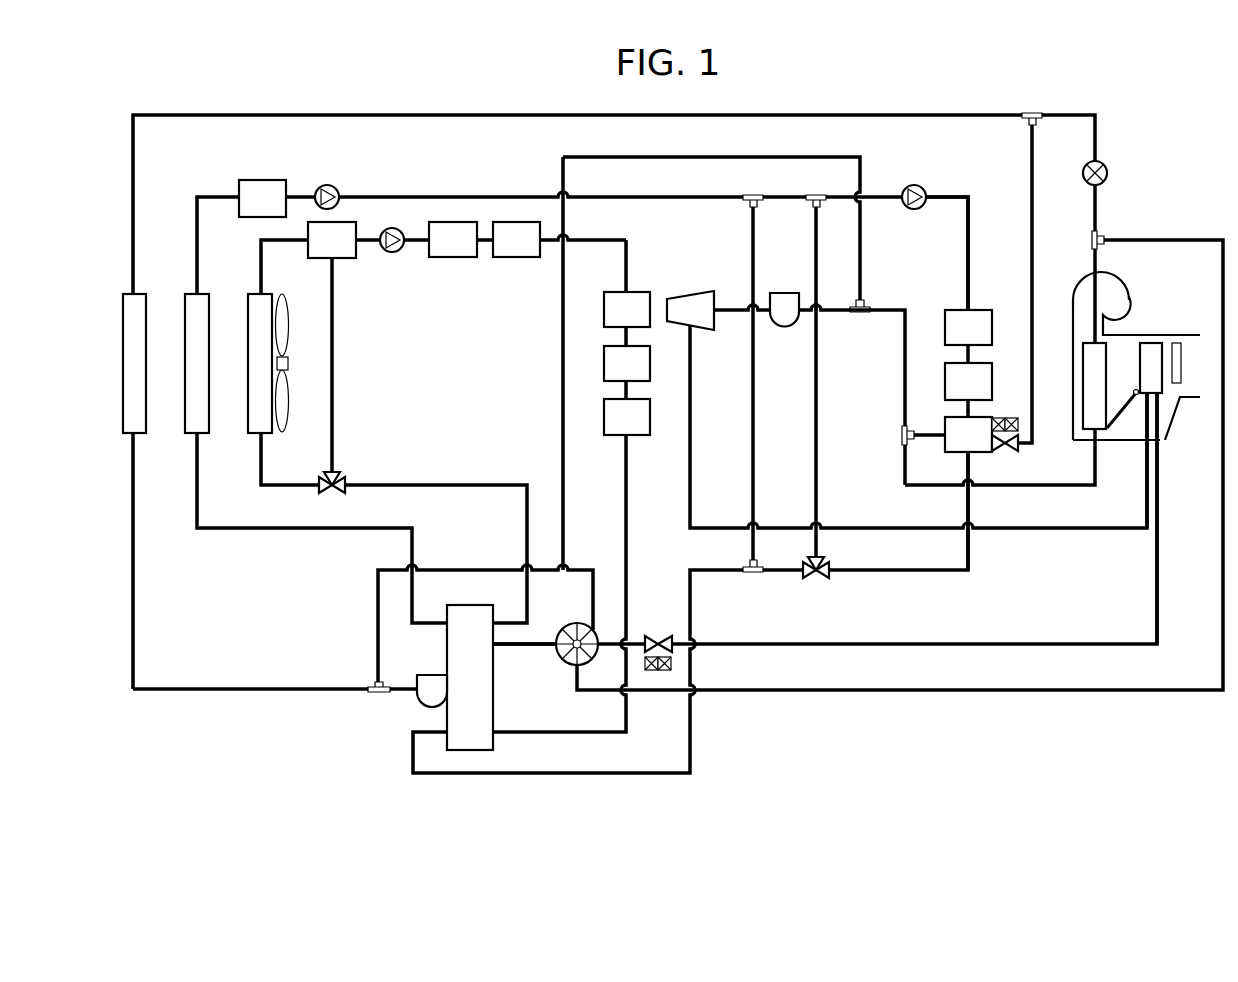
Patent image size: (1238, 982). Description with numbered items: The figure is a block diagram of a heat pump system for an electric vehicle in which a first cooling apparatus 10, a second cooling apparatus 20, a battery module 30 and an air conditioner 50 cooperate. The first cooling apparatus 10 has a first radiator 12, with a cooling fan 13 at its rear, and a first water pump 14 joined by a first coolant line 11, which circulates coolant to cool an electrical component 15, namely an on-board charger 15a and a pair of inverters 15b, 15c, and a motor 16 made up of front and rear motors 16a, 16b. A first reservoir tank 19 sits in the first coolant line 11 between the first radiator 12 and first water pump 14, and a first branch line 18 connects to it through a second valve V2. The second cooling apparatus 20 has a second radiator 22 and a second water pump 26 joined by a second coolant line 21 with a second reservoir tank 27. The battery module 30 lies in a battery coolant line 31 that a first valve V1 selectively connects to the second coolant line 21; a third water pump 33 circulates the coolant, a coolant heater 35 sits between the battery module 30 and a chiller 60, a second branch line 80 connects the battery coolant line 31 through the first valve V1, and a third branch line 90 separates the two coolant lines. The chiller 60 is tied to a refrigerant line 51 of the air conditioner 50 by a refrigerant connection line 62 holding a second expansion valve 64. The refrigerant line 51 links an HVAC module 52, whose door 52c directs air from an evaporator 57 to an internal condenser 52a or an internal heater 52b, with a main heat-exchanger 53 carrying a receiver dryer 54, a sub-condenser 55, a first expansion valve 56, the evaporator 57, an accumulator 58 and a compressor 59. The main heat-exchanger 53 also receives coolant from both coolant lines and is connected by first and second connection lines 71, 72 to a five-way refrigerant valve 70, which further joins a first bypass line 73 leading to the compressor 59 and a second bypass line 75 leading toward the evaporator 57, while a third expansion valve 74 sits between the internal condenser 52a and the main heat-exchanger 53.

The first cooling apparatus 10 is at (587, 319).
The first coolant line 11 is at (296, 483).
The first radiator 12 is at (253, 293).
The cooling fan 13 is at (289, 364).
The first water pump 14 is at (392, 253).
The electrical component 15 is at (484, 286).
The on-board charger 15a is at (604, 311).
The inverter 15b is at (452, 258).
The inverter 15c is at (514, 263).
The motor 16 is at (571, 390).
The front motor 16a is at (604, 416).
The rear motor 16b is at (604, 364).
The first branch line 18 is at (334, 364).
The first reservoir tank 19 is at (346, 259).
The second cooling apparatus 20 is at (566, 459).
The second coolant line 21 is at (449, 195).
The second radiator 22 is at (190, 293).
The second water pump 26 is at (327, 185).
The second reservoir tank 27 is at (261, 180).
The battery module 30 is at (945, 326).
The battery coolant line 31 is at (948, 195).
The third water pump 33 is at (914, 185).
The coolant heater 35 is at (945, 381).
The air conditioner 50 is at (649, 424).
The refrigerant line 51 is at (508, 118).
The HVAC module 52 is at (1159, 472).
The internal condenser 52a is at (1151, 342).
The internal heater 52b is at (1177, 342).
The door 52c is at (1121, 424).
The main heat-exchanger 53 is at (494, 712).
The receiver dryer 54 is at (414, 698).
The sub-condenser 55 is at (128, 293).
The first expansion valve 56 is at (1108, 174).
The evaporator 57 is at (1083, 390).
The accumulator 58 is at (783, 291).
The compressor 59 is at (688, 296).
The chiller 60 is at (945, 450).
The refrigerant connection line 62 is at (1034, 226).
The second expansion valve 64 is at (1008, 452).
The refrigerant valve 70 is at (573, 666).
The first connection line 71 is at (524, 647).
The second connection line 72 is at (378, 629).
The first bypass line 73 is at (859, 176).
The third expansion valve 74 is at (660, 635).
The second bypass line 75 is at (970, 692).
The second branch line 80 is at (818, 421).
The third branch line 90 is at (755, 421).
The first valve V1 is at (818, 580).
The second valve V2 is at (349, 483).